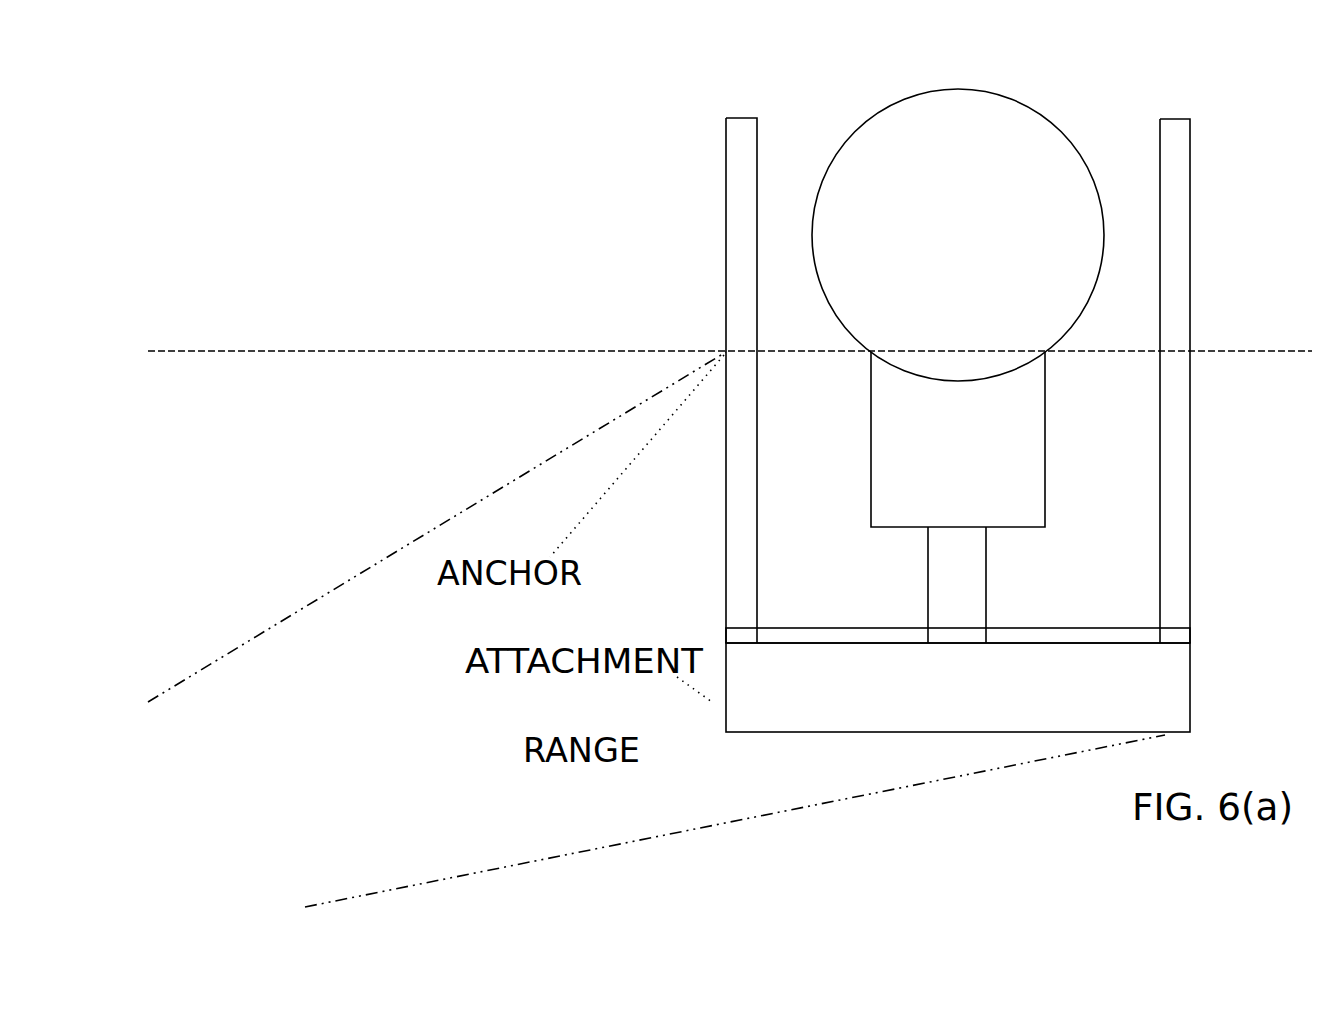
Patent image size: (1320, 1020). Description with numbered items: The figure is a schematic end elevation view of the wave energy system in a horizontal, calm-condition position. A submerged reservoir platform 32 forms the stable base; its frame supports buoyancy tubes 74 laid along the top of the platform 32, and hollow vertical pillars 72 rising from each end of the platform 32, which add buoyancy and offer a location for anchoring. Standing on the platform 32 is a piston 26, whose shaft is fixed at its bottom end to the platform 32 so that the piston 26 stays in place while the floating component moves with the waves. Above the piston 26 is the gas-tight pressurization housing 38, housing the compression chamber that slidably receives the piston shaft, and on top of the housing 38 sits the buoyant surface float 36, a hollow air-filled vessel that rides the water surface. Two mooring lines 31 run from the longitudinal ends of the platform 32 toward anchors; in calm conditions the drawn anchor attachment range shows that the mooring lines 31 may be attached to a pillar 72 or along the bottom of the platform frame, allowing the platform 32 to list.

The piston 26 is at (927, 582).
The mooring lines 31 is at (332, 590).
The reservoir platform 32 is at (1190, 700).
The buoyant surface float 36 is at (1002, 118).
The pressurization housing 38 is at (1045, 437).
The vertical pillars 72 is at (1177, 162).
The buoyancy tubes 74 is at (1125, 633).